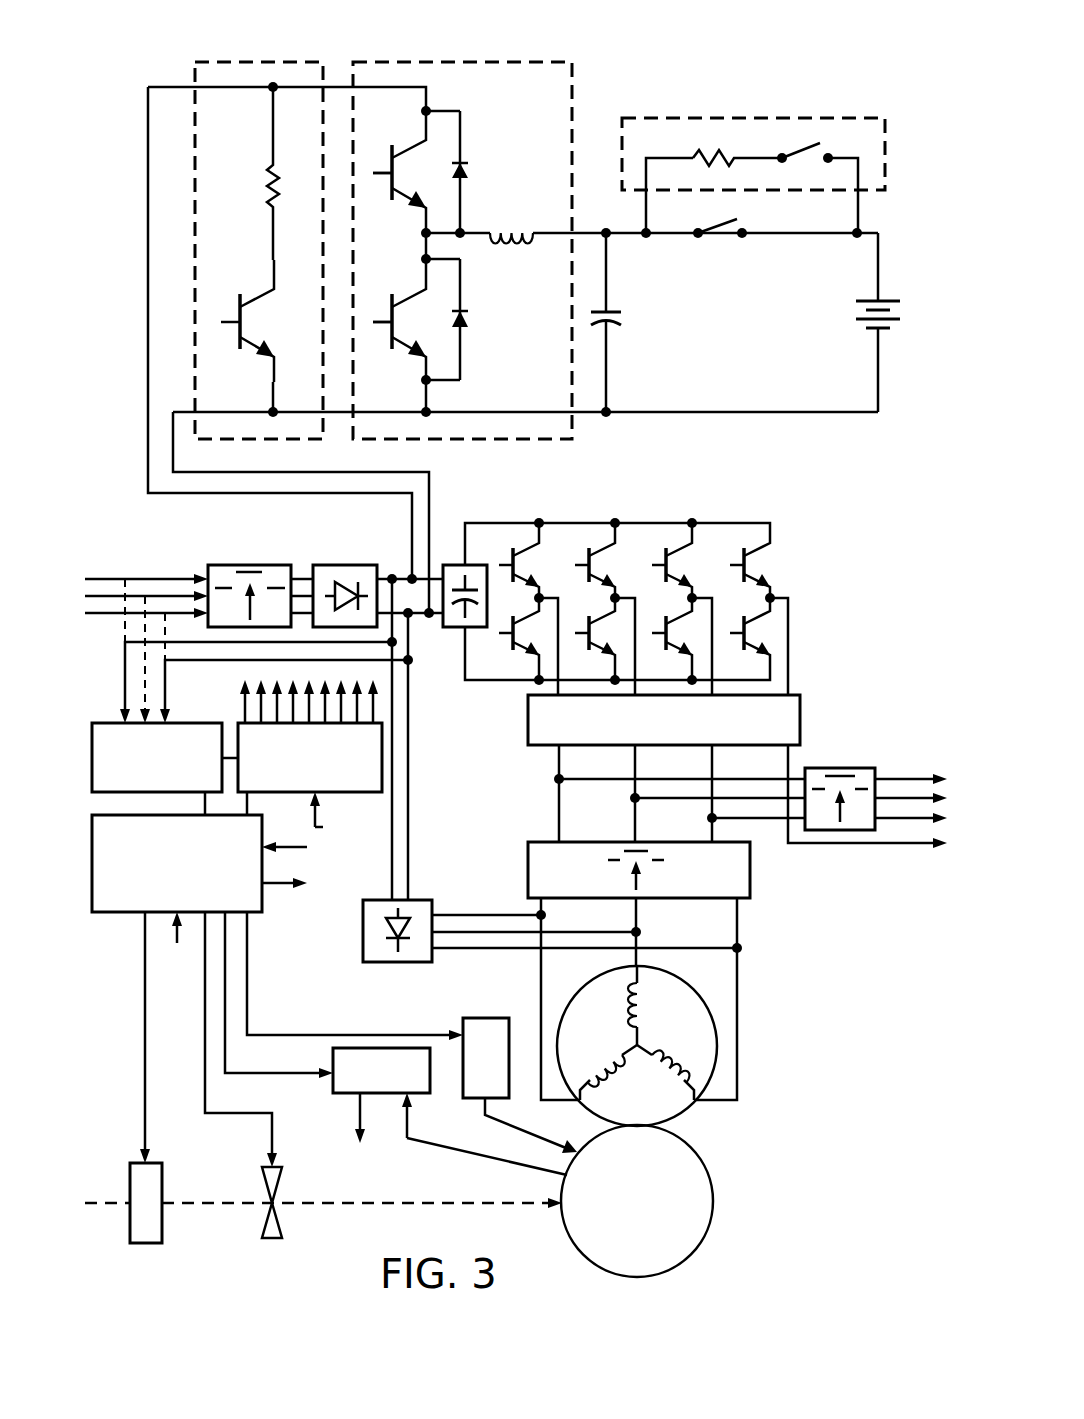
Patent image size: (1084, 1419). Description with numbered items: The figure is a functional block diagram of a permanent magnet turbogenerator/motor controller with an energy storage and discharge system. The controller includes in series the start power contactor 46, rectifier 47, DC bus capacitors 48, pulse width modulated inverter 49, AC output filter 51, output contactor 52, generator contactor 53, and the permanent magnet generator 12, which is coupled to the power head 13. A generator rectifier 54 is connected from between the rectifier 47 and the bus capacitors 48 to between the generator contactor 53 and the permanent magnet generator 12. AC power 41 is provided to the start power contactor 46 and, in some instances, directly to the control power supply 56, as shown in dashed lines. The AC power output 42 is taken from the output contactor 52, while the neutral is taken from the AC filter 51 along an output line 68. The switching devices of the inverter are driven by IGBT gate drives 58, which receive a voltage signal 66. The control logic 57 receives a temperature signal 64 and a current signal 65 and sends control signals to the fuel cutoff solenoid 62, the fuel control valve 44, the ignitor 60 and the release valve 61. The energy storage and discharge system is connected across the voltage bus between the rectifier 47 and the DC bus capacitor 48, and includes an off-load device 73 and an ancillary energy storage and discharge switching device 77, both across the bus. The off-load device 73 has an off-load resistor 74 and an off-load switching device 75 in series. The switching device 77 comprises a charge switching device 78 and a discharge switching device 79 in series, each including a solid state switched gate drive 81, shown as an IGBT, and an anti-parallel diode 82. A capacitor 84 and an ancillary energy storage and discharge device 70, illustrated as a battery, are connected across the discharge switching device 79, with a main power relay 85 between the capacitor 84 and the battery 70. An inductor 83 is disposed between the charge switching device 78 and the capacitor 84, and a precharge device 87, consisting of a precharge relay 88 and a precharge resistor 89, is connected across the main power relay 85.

The permanent magnet generator 12 is at (717, 1035).
The power head 13 is at (713, 1190).
The AC power 41 is at (112, 613).
The AC power output 42 is at (910, 817).
The fuel control valve 44 is at (278, 1195).
The start power contactor 46 is at (243, 563).
The rectifier 47 is at (333, 563).
The DC bus capacitors 48 is at (450, 563).
The pulse width modulated (PWM) inverter 49 is at (610, 503).
The AC output filter 51 is at (803, 693).
The output contactor 52 is at (810, 768).
The generator contactor 53 is at (750, 898).
The generator rectifier 54 is at (420, 900).
The control power supply 56 is at (195, 723).
The control logic 57 is at (108, 912).
The IGBT gate drives 58 is at (297, 775).
The ignitor 60 is at (473, 1073).
The release valve 61 is at (367, 1085).
The fuel cutoff solenoid 62 is at (162, 1177).
The temperature signal 64 is at (177, 950).
The current signal 65 is at (310, 848).
The voltage signal 66 is at (323, 827).
The output line 68 is at (910, 847).
The ancillary energy storage and discharge device 70 is at (885, 300).
The off-load device 73 is at (274, 58).
The off-load resistor 74 is at (268, 173).
The off-load switching device 75 is at (243, 335).
The ancillary energy storage and discharge switching device 77 is at (545, 58).
The charge switching device 78 is at (439, 138).
The discharge switching device 79 is at (439, 346).
The solid state switched gate drive 81 is at (417, 140).
The anti-parallel diode 82 is at (470, 166).
The inductor 83 is at (508, 232).
The capacitor 84 is at (620, 312).
The main power relay 85 is at (722, 235).
The precharge device 87 is at (749, 112).
The precharge relay 88 is at (805, 148).
The precharge resistor 89 is at (706, 155).